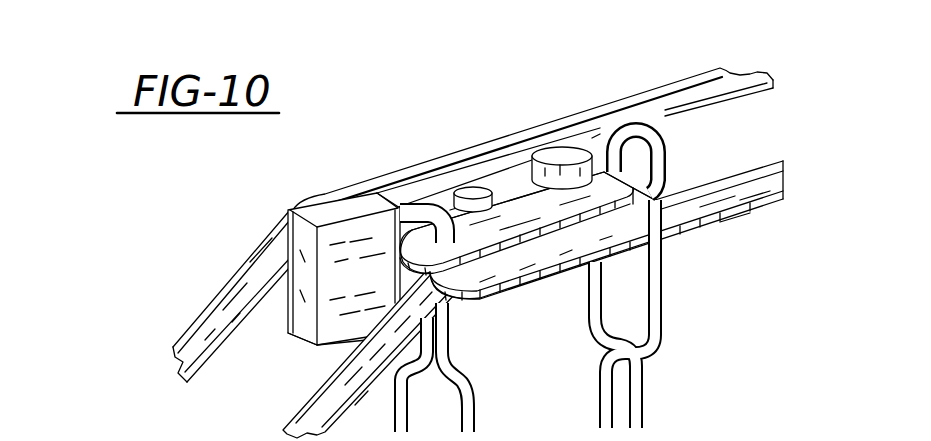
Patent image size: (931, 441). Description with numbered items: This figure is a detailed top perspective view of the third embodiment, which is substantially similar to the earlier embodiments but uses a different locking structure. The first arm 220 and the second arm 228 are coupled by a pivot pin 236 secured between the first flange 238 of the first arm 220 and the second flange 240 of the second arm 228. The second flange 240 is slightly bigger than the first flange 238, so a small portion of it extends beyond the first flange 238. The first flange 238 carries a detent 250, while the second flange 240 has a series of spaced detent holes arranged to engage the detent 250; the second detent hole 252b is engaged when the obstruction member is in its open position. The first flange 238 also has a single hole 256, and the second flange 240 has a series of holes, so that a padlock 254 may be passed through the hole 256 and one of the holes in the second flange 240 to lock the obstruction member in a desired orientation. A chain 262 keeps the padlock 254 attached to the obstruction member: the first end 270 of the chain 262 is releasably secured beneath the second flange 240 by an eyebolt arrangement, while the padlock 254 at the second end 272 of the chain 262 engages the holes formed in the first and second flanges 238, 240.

The first arm 220 is at (233, 293).
The second arm 228 is at (320, 400).
The padlock 254 is at (313, 210).
The pivot pin 236 is at (460, 193).
The first flange 238 is at (480, 180).
The hole 256 is at (493, 215).
The second flange 240 is at (540, 287).
The detent 250 is at (656, 150).
The first end of the chain 270 is at (651, 128).
The second detent hole 252b is at (657, 233).
The chain 262 is at (663, 325).
The second end of the chain 272 is at (455, 352).